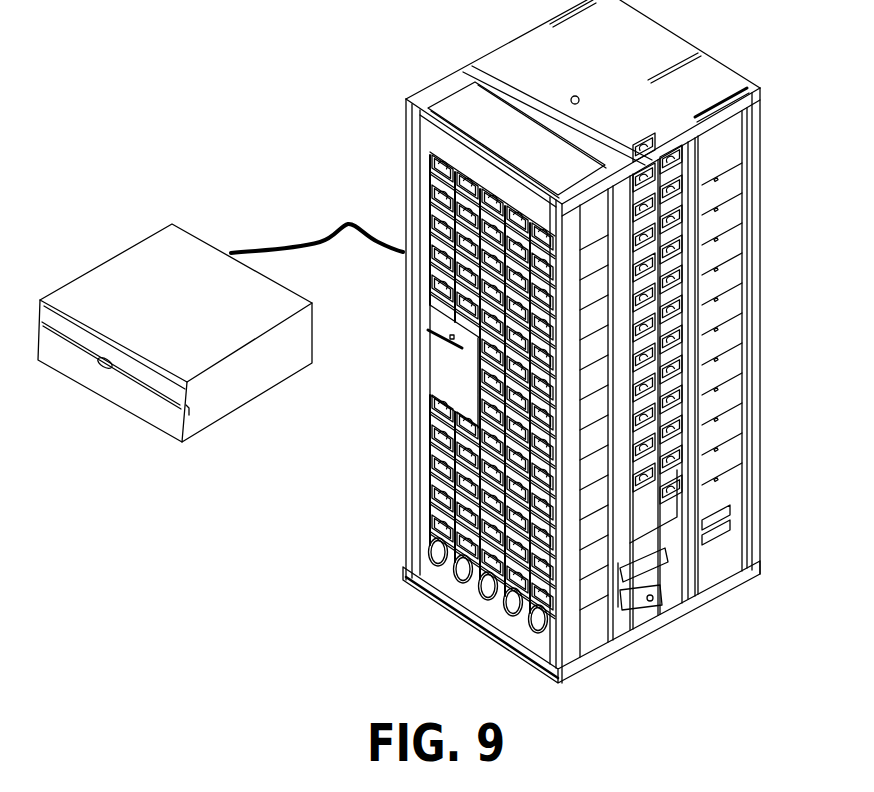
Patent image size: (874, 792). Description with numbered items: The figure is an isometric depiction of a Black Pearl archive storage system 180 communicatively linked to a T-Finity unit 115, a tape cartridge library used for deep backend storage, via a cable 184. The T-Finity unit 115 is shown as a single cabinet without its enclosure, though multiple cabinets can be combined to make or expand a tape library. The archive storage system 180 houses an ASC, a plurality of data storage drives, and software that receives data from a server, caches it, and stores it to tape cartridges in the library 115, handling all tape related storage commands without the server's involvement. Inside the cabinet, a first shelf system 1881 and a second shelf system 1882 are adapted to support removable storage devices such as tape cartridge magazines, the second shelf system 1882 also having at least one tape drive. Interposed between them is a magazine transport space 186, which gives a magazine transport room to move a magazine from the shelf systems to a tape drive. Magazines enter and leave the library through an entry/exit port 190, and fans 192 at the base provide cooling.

The T-Finity unit 115 is at (580, 341).
The Black Pearl archive storage system 180 is at (157, 226).
The cable 184 is at (307, 240).
The magazine transport space 186 is at (667, 578).
The first shelf system 1881 is at (442, 387).
The second shelf system 1882 is at (732, 381).
The entry/exit port 190 is at (440, 362).
The fans 192 is at (437, 600).